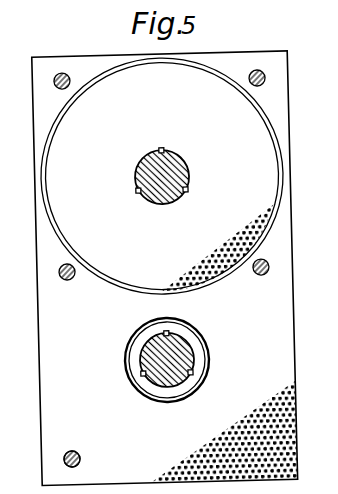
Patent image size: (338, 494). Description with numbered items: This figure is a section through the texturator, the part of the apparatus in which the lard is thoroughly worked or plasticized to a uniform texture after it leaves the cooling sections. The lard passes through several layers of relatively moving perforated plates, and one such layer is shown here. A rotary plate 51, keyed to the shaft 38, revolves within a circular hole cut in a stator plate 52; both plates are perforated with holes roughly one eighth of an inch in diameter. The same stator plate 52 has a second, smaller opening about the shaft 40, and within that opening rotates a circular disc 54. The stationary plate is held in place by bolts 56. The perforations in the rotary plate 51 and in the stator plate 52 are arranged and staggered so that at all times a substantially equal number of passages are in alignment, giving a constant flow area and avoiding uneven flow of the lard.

The shaft 38 is at (154, 162).
The shaft 40 is at (146, 355).
The rotary plate 51 is at (270, 176).
The stator plate 52 is at (279, 386).
The circular disc 54 is at (196, 363).
The bolts 56 is at (273, 81).